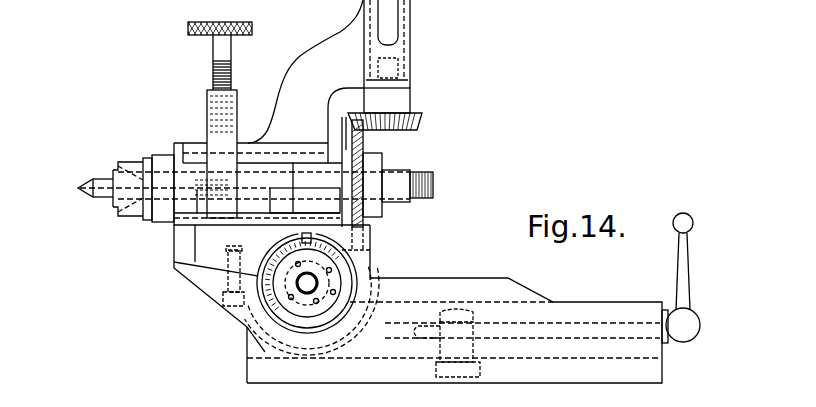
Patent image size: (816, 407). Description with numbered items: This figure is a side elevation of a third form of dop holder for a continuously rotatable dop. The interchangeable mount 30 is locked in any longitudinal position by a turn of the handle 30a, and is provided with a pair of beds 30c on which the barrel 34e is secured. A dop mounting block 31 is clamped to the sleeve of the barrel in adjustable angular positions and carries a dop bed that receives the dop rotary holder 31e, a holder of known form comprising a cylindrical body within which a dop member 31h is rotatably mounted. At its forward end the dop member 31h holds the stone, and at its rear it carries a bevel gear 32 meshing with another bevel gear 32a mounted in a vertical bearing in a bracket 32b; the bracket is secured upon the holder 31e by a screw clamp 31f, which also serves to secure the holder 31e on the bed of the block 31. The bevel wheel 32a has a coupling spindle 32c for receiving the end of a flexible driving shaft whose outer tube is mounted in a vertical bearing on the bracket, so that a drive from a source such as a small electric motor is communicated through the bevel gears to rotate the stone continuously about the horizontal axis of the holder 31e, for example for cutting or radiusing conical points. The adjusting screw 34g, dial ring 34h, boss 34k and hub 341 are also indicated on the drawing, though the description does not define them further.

The mount 30 is at (474, 269).
The handle 30a is at (682, 283).
The beds 30c is at (431, 361).
The dop mounting block 31 is at (217, 287).
The dop rotary holder 31e is at (176, 145).
The screw clamp 31f is at (236, 108).
The dop member 31h is at (131, 163).
The bevel gear 32 is at (365, 143).
The bevel gear 32a is at (421, 119).
The bracket 32b is at (303, 65).
The coupling spindle 32c is at (392, 30).
The barrel 34e is at (262, 303).
The adjusting screw 34g is at (270, 298).
The dial ring 34h is at (330, 327).
The boss 34k is at (340, 274).
The dial hub 341 is at (305, 292).